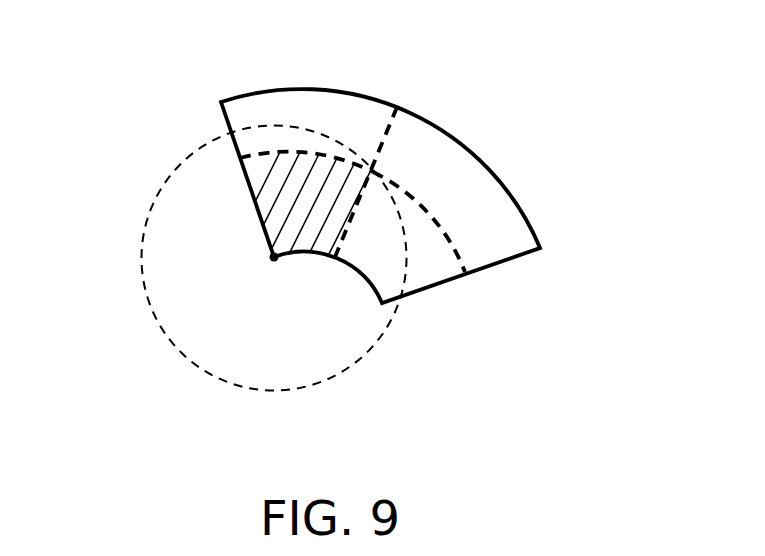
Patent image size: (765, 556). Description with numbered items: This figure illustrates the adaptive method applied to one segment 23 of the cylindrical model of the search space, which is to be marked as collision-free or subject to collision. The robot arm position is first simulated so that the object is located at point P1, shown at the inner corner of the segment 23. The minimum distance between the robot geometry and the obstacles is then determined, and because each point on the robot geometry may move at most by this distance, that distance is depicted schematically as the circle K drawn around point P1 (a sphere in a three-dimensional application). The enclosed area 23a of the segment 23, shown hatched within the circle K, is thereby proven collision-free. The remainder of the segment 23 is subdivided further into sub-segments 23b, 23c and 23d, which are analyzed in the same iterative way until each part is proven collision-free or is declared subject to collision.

The segment 23 is at (514, 115).
The enclosed area 23a is at (275, 195).
The sub-segment 23b is at (302, 113).
The sub-segment 23c is at (466, 217).
The sub-segment 23d is at (417, 273).
The circle K is at (156, 228).
The point P1 is at (274, 257).